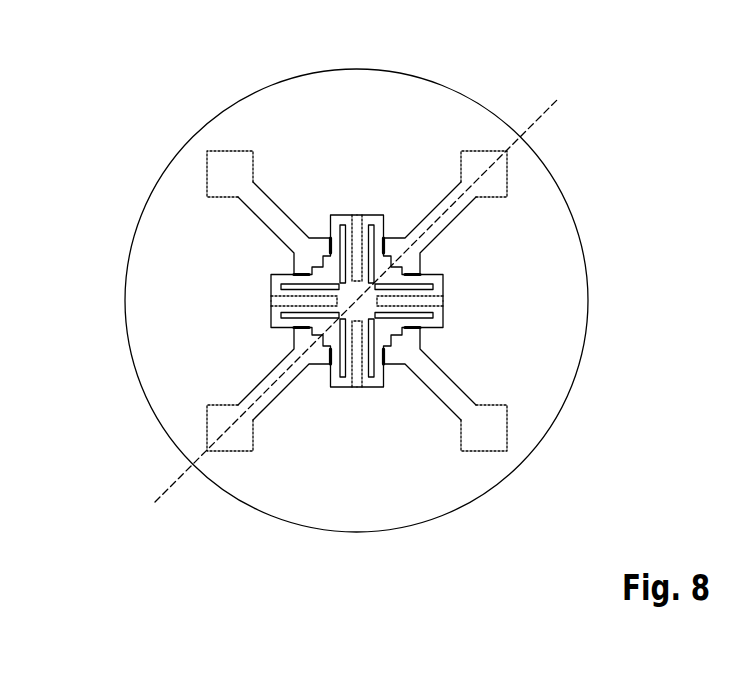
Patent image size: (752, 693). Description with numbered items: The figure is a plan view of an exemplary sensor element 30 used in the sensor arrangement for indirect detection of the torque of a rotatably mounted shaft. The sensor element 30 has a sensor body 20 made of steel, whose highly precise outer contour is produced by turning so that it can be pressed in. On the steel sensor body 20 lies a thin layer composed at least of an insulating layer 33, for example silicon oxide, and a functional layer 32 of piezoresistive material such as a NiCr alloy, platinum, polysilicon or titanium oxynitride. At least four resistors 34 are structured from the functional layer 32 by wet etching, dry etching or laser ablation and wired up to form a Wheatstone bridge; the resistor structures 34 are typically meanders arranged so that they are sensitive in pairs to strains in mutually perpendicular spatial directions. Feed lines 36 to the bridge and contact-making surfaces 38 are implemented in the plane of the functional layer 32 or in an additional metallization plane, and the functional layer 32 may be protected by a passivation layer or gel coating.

The sensor body 20 is at (447, 513).
The sensor element 30 is at (111, 111).
The functional layer 32 is at (460, 292).
The insulating layer 33 is at (559, 265).
The resistors 34 is at (372, 216).
The feed lines 36 is at (268, 218).
The contact-making surfaces 38 is at (218, 163).